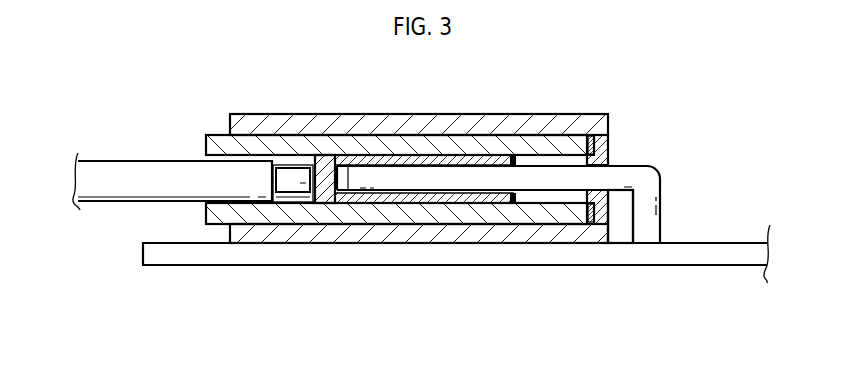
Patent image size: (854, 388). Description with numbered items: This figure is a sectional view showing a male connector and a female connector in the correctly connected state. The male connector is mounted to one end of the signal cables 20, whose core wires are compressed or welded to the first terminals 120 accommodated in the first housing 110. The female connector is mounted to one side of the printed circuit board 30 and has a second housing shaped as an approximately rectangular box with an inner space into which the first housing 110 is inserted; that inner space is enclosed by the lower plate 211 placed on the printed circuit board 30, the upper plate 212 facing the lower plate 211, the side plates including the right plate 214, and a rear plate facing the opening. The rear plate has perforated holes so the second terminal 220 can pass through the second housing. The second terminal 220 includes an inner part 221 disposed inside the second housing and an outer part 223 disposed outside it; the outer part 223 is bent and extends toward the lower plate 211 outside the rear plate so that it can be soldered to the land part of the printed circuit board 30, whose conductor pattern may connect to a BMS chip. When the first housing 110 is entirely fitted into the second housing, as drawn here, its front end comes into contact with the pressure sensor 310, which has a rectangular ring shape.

The signal cables 20 is at (147, 162).
The printed circuit board 30 is at (725, 243).
The first housing 110 is at (323, 145).
The first terminals 120 is at (444, 162).
The lower plate 211 is at (363, 239).
The upper plate 212 is at (383, 114).
The right plate 214 is at (608, 150).
The second terminal 220 is at (501, 259).
The inner part 221 is at (561, 180).
The outer part 223 is at (636, 251).
The pressure sensor 310 is at (594, 146).